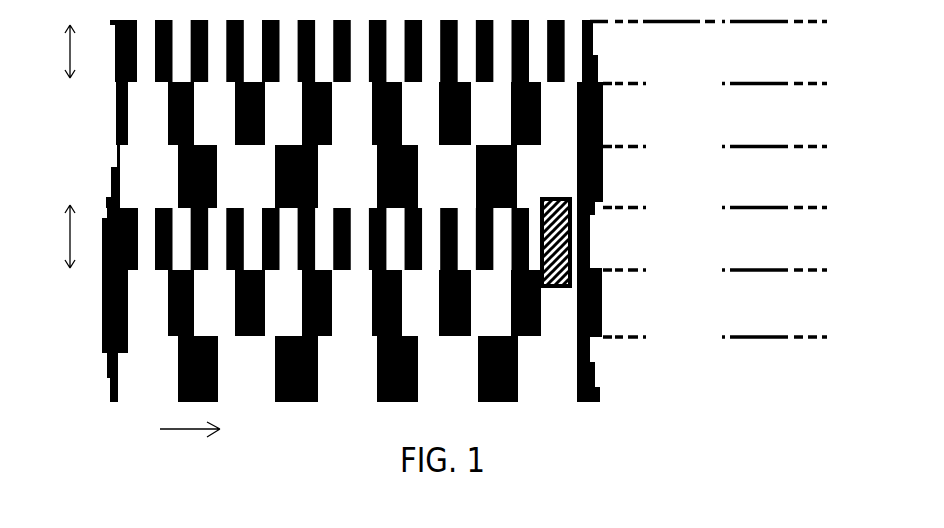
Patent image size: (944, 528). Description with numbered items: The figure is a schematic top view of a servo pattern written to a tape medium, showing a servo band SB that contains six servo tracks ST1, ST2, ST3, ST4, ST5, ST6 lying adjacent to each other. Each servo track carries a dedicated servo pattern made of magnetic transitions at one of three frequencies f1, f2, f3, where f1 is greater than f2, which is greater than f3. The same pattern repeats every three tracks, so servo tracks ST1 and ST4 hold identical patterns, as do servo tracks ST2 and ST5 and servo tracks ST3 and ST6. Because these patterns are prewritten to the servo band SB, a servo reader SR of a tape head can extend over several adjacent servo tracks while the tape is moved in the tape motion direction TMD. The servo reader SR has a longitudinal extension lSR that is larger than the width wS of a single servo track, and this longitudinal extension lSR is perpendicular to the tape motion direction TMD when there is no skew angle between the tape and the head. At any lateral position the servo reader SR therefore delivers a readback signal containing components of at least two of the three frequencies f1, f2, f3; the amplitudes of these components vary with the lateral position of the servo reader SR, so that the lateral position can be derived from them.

The servo track ST1 is at (468, 52).
The servo track ST2 is at (413, 114).
The servo track ST3 is at (408, 176).
The servo track ST4 is at (408, 239).
The servo track ST5 is at (409, 311).
The servo track ST6 is at (412, 369).
The frequency f1 is at (774, 155).
The frequency f2 is at (774, 218).
The frequency f3 is at (774, 274).
The servo reader SR is at (548, 288).
The servo band SB is at (565, 437).
The width of a servo track wS is at (51, 51).
The longitudinal extension of the servo reader lSR is at (51, 236).
The tape motion direction TMD is at (226, 453).